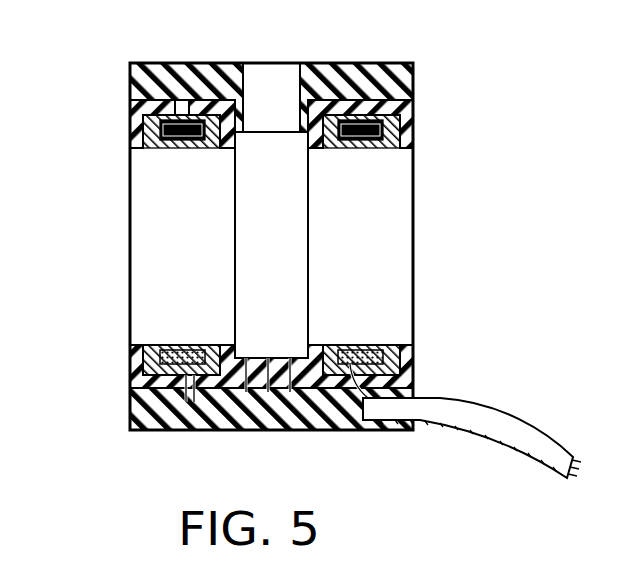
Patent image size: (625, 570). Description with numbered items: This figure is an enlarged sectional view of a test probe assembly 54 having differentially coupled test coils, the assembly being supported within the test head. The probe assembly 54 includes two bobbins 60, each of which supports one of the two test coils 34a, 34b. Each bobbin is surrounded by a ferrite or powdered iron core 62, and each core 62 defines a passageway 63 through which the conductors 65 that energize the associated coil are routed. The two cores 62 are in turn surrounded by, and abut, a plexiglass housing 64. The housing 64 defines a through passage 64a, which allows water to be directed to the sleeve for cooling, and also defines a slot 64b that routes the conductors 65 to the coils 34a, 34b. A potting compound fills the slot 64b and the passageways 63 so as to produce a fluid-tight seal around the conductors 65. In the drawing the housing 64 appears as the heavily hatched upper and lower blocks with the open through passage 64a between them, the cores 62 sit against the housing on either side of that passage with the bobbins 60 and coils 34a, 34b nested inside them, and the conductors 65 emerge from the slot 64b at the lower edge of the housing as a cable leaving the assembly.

The probe assembly 54 is at (118, 212).
The bobbin 60 is at (148, 148).
The core 62 is at (129, 118).
The passageway 63 is at (176, 108).
The housing 64 is at (356, 82).
The through passage 64a is at (271, 125).
The slot 64b is at (272, 422).
The conductors 65 is at (386, 422).
The coil 34a is at (172, 344).
The coil 34b is at (350, 344).